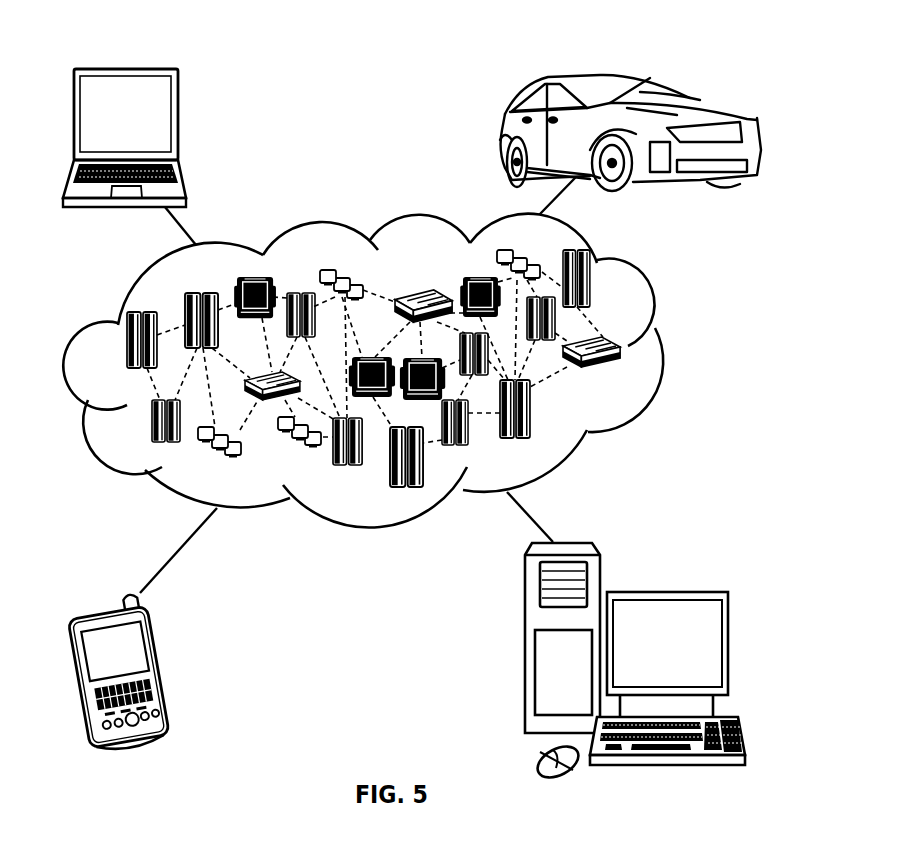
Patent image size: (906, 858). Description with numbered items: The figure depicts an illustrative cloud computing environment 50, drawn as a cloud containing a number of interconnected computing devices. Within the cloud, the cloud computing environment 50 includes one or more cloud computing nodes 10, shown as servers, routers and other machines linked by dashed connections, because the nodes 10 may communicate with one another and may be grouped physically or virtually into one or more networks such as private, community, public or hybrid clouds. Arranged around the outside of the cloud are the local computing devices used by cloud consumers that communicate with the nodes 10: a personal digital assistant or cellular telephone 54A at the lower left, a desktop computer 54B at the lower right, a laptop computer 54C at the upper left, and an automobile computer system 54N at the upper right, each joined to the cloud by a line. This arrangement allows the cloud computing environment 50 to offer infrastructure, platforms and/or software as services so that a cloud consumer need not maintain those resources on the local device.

The cloud computing node 10 is at (627, 379).
The cloud computing environment 50 is at (668, 350).
The personal digital assistant or cellular telephone 54A is at (168, 668).
The desktop computer 54B is at (665, 592).
The laptop computer 54C is at (178, 121).
The automobile computer system 54N is at (505, 133).